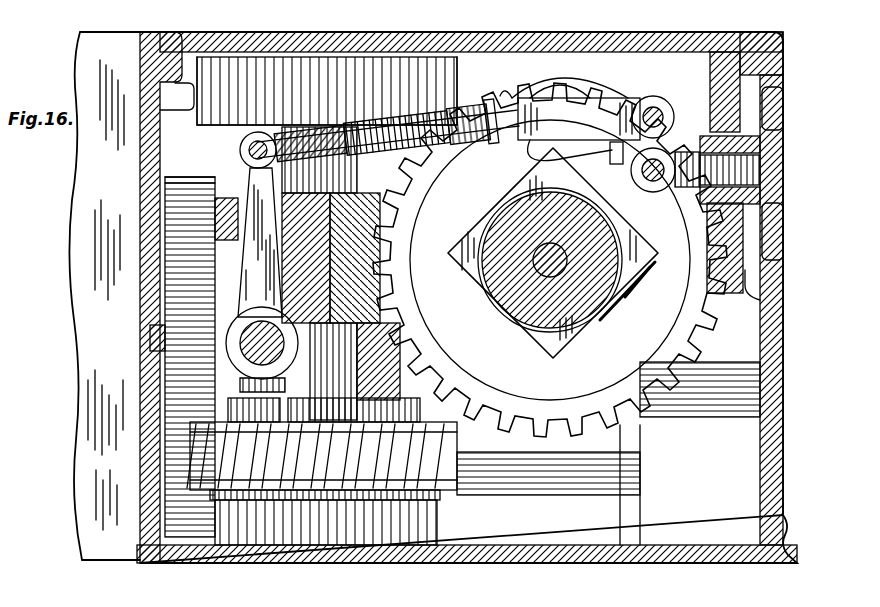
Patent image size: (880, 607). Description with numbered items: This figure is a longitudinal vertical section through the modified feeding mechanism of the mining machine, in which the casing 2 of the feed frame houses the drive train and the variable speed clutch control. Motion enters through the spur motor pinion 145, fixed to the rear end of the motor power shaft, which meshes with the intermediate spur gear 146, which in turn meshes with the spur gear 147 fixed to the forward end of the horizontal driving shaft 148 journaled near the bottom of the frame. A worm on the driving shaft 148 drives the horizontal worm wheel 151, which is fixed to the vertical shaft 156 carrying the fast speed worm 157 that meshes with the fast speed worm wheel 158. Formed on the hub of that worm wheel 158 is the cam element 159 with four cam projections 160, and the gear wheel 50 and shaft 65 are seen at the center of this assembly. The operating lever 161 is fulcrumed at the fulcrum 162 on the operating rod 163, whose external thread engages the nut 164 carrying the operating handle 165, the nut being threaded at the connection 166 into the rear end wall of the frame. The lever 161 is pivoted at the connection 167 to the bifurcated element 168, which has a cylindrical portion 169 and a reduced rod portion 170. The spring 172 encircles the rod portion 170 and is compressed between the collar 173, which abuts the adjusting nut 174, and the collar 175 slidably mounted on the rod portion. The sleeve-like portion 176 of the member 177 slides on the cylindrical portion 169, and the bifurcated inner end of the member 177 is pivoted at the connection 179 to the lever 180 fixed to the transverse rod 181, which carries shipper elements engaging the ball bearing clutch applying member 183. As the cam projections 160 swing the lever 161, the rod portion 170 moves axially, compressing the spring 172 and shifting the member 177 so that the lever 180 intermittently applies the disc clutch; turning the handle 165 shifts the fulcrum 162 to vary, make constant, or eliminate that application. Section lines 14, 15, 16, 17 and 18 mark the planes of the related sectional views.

The casing 2 is at (735, 566).
The section line 14- 14 is at (533, 18).
The section line 15- 15 is at (57, 333).
The section line 16- 16 is at (242, 605).
The section line 17- 17 is at (306, 18).
The section line 18- 18 is at (226, 167).
The gear wheel 50 is at (550, 260).
The shaft 65 is at (562, 268).
The spur motor pinion 145 is at (142, 199).
The intermediate spur gear 146 is at (150, 338).
The spur gear 147 is at (186, 512).
The driving shaft 148 is at (511, 478).
The worm wheel 151 is at (292, 492).
The vertical shaft 156 is at (405, 190).
The fast speed worm 157 is at (400, 240).
The fast speed worm wheel 158 is at (500, 95).
The cam element 159 is at (500, 318).
The cam projections 160 is at (650, 285).
The operating lever 161 is at (616, 165).
The fulcrum 162 is at (658, 193).
The operating rod 163 is at (680, 205).
The nut 164 is at (722, 192).
The operating handle 165 is at (772, 245).
The threaded connection 166 is at (738, 112).
The pivotal connection 167 is at (653, 106).
The bifurcated element 168 is at (585, 100).
The cylindrical portion 169 is at (494, 140).
The rod portion 170 is at (468, 160).
The spring 172 is at (486, 158).
The collar 173 is at (478, 100).
The adjusting nut 174 is at (330, 100).
The collar 175 is at (447, 93).
The sleeve-like portion 176 is at (556, 82).
The member 177 is at (343, 104).
The pivotal connection 179 is at (241, 139).
The lever 180 is at (257, 196).
The rod 181 is at (262, 380).
The ball bearing clutch applying member 183 is at (386, 333).